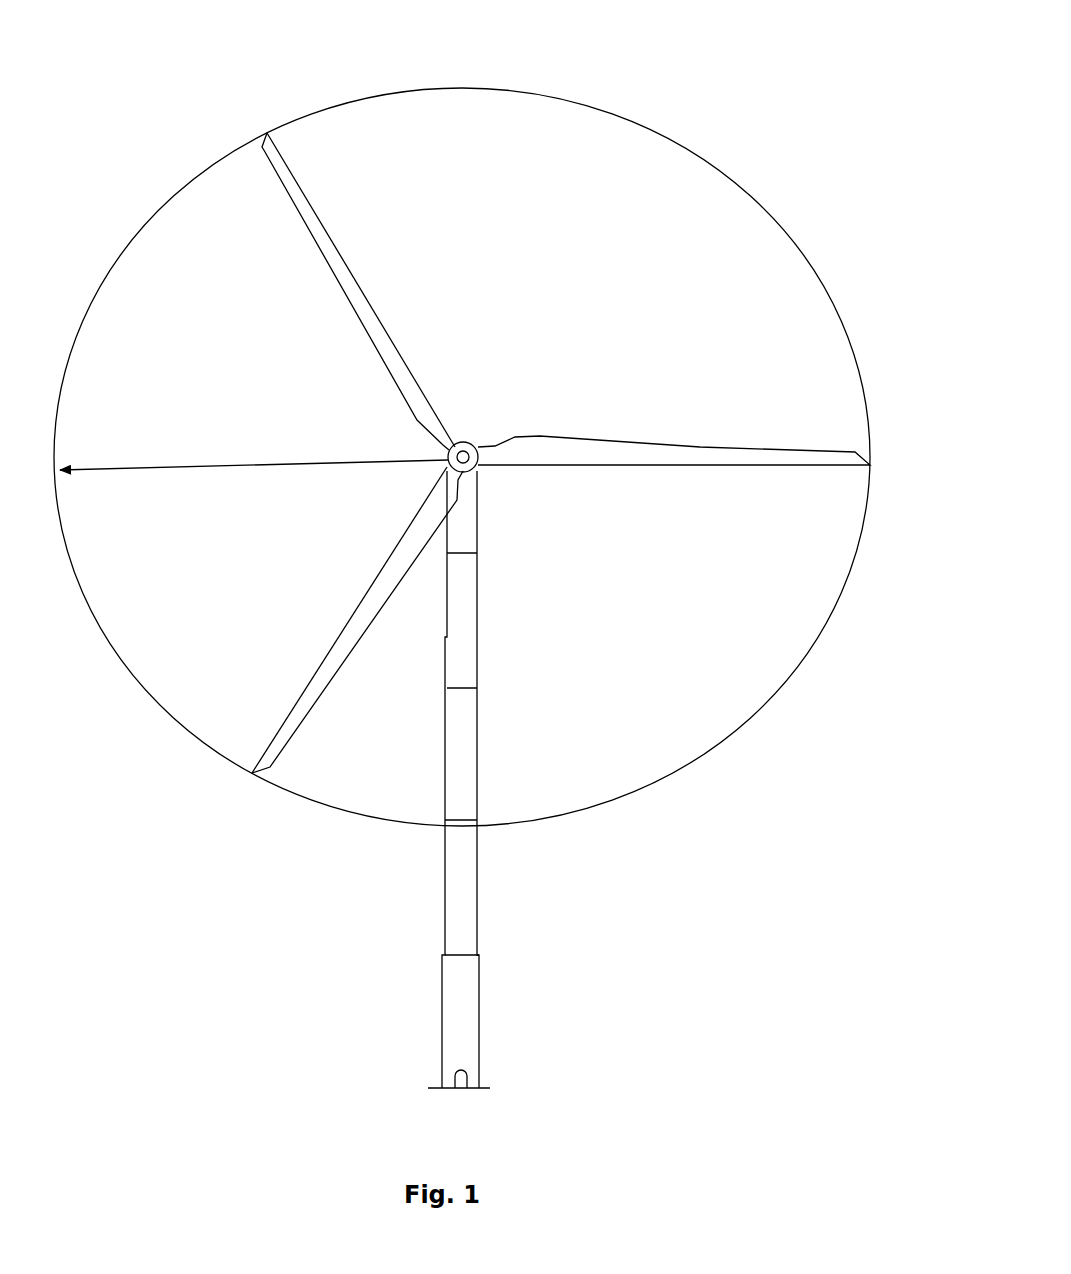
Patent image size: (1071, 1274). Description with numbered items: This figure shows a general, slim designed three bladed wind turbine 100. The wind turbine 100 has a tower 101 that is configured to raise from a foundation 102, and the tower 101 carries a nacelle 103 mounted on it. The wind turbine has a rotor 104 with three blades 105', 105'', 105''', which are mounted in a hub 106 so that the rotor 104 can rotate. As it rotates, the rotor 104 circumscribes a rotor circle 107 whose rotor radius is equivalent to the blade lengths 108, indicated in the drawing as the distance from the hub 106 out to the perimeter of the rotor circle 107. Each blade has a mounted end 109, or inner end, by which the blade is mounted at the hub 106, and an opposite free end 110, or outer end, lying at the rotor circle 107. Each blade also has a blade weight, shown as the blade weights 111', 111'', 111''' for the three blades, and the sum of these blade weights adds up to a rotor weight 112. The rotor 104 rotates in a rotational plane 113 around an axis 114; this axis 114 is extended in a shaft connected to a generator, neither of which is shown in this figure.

The wind turbine 100 is at (634, 82).
The tower 101 is at (453, 929).
The foundation 102 is at (480, 1085).
The nacelle 103 is at (617, 265).
The rotor 104 is at (478, 392).
The blade 105' is at (674, 428).
The blade 105'' is at (357, 620).
The blade 105''' is at (393, 291).
The hub 106 is at (480, 463).
The rotor circle 107 is at (730, 738).
The blade lengths 108 is at (258, 468).
The mounted end 109 is at (437, 433).
The free end 110 is at (267, 133).
The blade weight 111' is at (801, 421).
The blade weight 111'' is at (258, 686).
The blade weight 111''' is at (382, 163).
The rotor weight 112 is at (572, 275).
The rotational plane 113 is at (727, 673).
The axis 114 is at (458, 454).